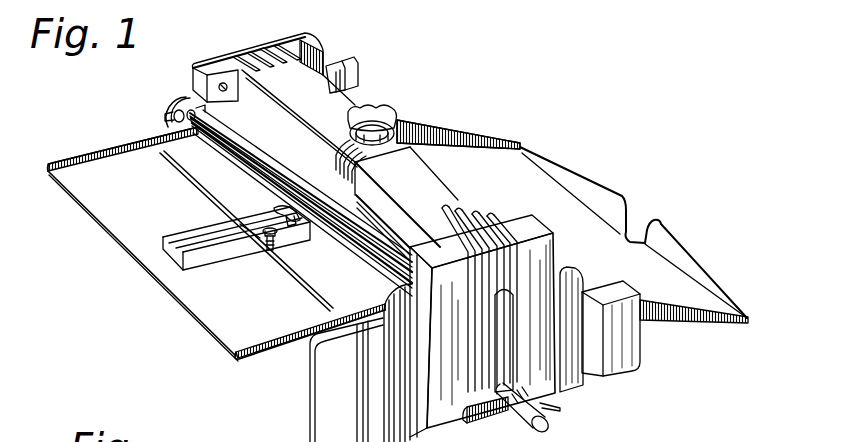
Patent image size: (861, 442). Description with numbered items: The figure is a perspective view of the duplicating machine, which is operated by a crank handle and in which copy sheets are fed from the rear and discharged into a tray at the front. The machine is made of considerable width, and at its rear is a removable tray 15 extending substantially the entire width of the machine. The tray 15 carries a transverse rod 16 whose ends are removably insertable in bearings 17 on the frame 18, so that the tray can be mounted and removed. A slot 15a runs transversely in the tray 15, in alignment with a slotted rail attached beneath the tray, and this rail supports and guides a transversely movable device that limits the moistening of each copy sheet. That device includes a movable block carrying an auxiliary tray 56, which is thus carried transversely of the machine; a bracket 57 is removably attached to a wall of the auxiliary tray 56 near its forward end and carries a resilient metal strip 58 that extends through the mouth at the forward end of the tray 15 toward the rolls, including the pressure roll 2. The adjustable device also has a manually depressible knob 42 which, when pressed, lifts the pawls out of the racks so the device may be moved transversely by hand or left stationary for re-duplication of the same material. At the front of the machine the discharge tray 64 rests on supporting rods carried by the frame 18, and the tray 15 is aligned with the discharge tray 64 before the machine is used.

The pressure roll 2 is at (283, 153).
The removable tray 15 is at (112, 236).
The slot 15a is at (197, 191).
The transverse rod 16 is at (218, 143).
The bearings 17 is at (178, 117).
The frame 18 is at (305, 43).
The knob 42 is at (272, 243).
The auxiliary tray 56 is at (222, 252).
The bracket 57 is at (293, 227).
The resilient metal strip 58 is at (273, 210).
The discharge tray 64 is at (697, 293).